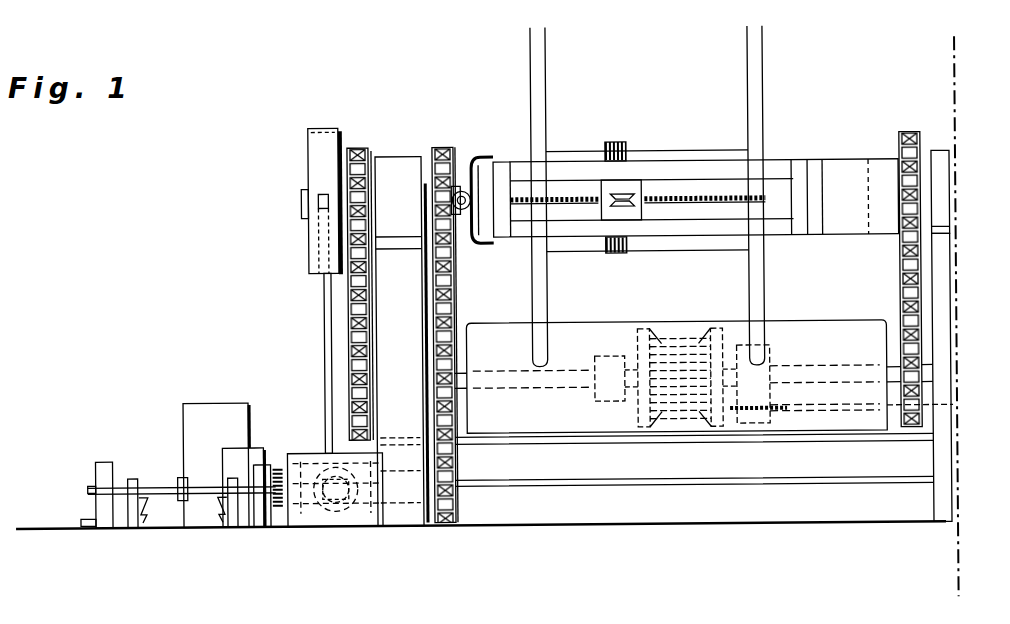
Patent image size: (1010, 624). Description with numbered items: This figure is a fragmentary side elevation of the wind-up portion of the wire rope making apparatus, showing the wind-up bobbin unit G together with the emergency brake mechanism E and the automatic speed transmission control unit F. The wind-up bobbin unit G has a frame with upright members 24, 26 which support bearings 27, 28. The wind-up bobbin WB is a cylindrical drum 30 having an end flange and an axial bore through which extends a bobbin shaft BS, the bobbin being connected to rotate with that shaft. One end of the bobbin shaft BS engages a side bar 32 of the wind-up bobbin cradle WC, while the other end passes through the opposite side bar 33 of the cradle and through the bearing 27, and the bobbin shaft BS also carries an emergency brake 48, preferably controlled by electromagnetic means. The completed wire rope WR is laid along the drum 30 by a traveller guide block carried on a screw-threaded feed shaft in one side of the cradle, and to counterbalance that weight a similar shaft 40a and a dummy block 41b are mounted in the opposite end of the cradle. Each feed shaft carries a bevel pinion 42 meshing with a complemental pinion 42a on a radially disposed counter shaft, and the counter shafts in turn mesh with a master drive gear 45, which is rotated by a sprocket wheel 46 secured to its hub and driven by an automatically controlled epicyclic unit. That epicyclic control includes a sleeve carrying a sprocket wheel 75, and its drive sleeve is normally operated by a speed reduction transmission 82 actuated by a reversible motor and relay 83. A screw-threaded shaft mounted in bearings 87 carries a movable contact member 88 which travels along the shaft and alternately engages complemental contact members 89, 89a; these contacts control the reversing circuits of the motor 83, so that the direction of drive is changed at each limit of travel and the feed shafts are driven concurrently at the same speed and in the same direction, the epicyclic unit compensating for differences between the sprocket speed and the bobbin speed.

The upright member 24 is at (406, 515).
The upright member 26 is at (930, 521).
The bearing 27 is at (391, 162).
The bearing 28 is at (940, 176).
The cylindrical drum 30 is at (699, 152).
The side bar 32 is at (802, 224).
The side bar 33 is at (506, 238).
The shaft 40a is at (588, 206).
The dummy block 41b is at (630, 182).
The bevel pinion 42 is at (480, 193).
The complemental pinion 42a is at (458, 190).
The master drive gear 45 is at (481, 188).
The sprocket wheel 46 is at (446, 150).
The emergency brake 48 is at (318, 166).
The sprocket wheel 75 is at (438, 521).
The speed reduction transmission 82 is at (240, 450).
The reversible motor and relay 83 is at (201, 415).
The bearings 87 is at (100, 527).
The movable contact member 88 is at (178, 477).
The complemental contact member 89 is at (133, 527).
The complemental contact member 89a is at (232, 527).
The emergency brake mechanism E is at (359, 129).
The bobbin shaft BS is at (304, 202).
The wire rope WR is at (621, 136).
The wind-up bobbin WB is at (642, 148).
The wind-up bobbin unit G is at (766, 78).
The wind-up bobbin cradle WC is at (840, 168).
The automatic speed transmission control unit F is at (690, 415).